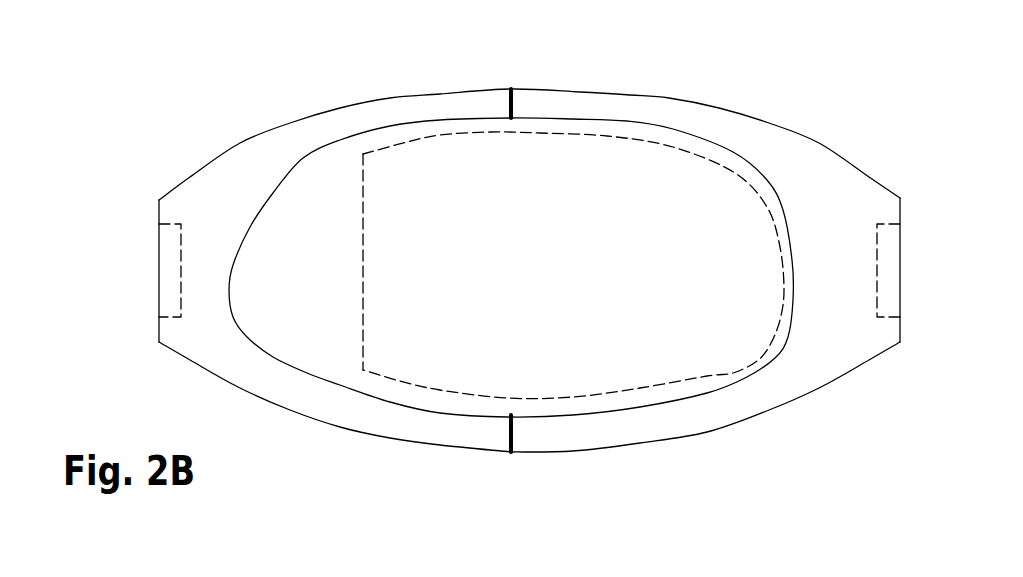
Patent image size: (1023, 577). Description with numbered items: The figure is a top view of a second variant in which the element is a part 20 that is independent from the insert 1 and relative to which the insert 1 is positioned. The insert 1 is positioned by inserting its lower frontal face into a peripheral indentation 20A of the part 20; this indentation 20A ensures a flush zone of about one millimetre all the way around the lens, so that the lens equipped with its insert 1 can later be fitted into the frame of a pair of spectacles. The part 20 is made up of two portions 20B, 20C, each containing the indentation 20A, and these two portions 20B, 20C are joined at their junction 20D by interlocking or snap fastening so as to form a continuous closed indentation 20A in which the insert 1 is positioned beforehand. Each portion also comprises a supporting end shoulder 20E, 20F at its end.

The insert 1 is at (627, 120).
The part 20 is at (853, 157).
The peripheral indentation 20A is at (338, 360).
The first portion 20B is at (357, 405).
The second portion 20C is at (718, 400).
The junction 20D is at (509, 108).
The supporting end shoulder 20E is at (168, 272).
The supporting end shoulder 20F is at (888, 262).